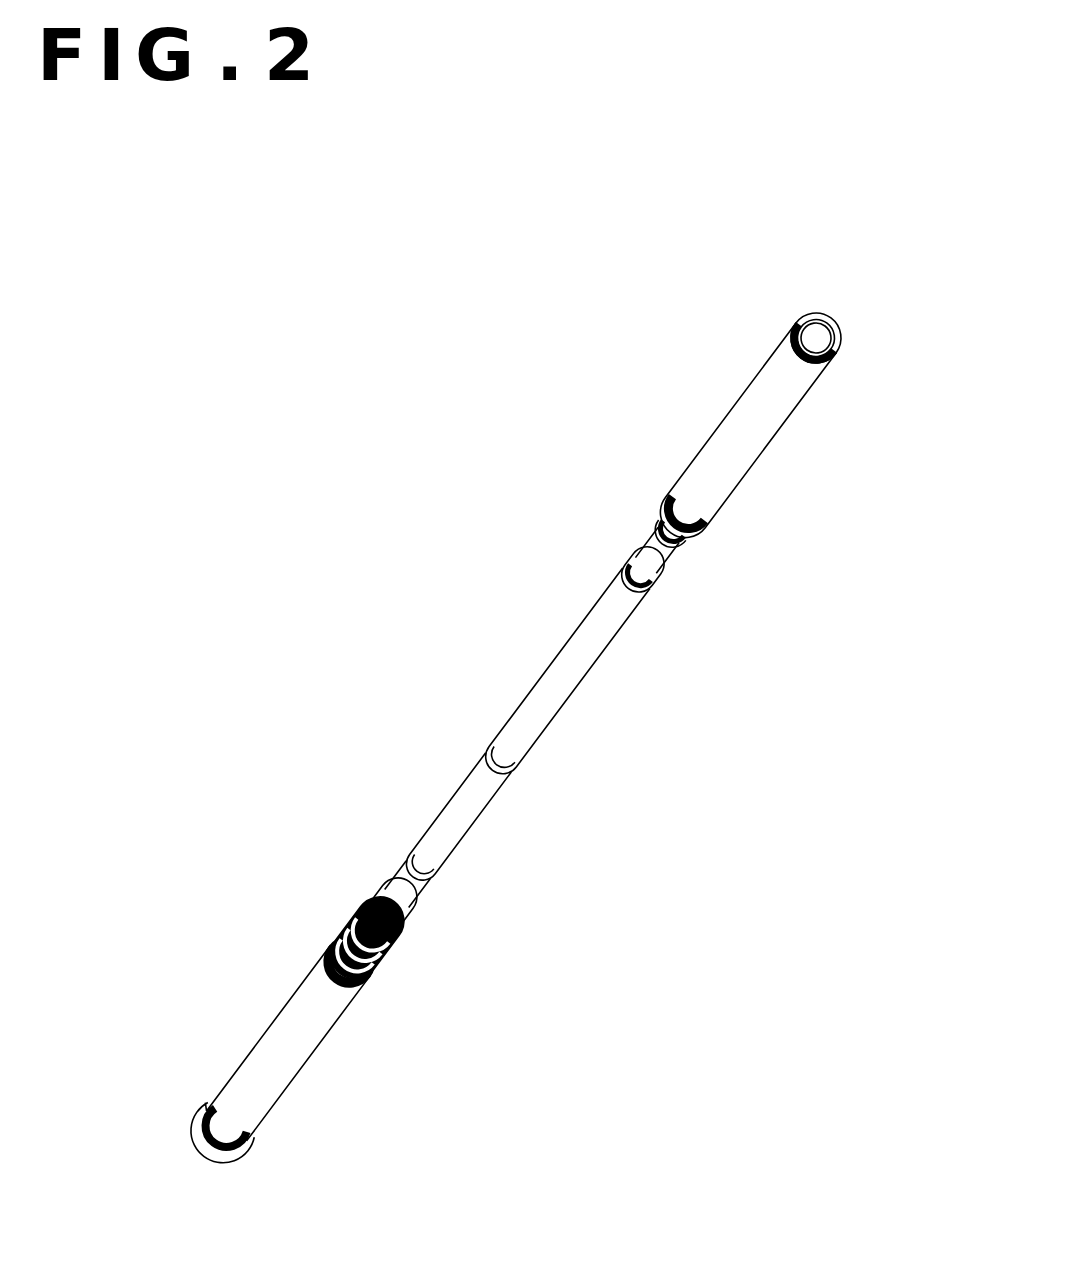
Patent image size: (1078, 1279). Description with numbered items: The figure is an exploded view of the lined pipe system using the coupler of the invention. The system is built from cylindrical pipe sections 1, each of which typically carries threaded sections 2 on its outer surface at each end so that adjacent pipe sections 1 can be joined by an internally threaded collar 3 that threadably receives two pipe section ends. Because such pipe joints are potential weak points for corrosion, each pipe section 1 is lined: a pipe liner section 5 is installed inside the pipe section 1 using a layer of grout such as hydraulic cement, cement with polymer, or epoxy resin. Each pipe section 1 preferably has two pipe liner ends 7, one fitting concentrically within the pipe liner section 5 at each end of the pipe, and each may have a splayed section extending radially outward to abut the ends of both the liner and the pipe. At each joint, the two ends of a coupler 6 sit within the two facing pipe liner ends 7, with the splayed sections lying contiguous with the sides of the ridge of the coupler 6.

The pipe section 1 is at (766, 451).
The threaded section 2 is at (844, 341).
The collar 3 is at (378, 983).
The pipe liner section 5 is at (584, 680).
The coupler 6 is at (399, 930).
The pipe liner end 7 is at (676, 563).